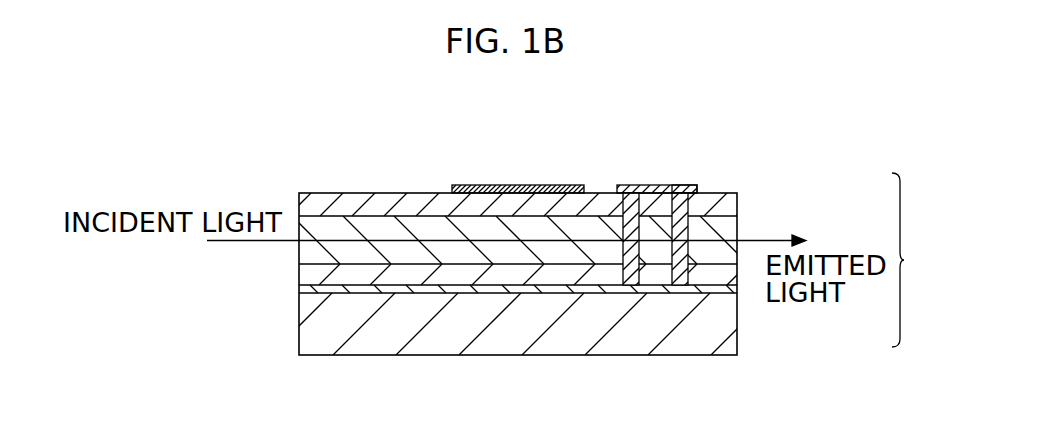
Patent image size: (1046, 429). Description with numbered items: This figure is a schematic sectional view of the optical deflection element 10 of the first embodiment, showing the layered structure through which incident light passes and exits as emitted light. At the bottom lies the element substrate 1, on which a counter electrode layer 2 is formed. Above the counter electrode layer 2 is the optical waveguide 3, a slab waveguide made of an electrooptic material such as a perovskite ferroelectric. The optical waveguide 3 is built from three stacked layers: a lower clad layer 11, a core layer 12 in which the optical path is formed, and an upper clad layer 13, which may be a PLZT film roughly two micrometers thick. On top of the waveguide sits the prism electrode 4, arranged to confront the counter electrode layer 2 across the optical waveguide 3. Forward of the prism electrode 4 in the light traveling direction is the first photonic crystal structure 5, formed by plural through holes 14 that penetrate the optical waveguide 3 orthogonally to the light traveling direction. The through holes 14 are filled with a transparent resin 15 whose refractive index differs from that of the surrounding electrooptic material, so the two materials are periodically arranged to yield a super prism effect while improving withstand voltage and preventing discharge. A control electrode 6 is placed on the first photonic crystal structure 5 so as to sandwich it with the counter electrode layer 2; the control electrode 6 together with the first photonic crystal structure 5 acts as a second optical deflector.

The element substrate 1 is at (348, 327).
The counter electrode layer 2 is at (452, 293).
The optical waveguide 3 is at (908, 260).
The prism electrode 4 is at (516, 185).
The first photonic crystal structure 5 is at (616, 245).
The control electrode 6 is at (668, 185).
The optical deflection element 10 is at (382, 115).
The lower clad layer 11 is at (298, 277).
The core layer 12 is at (298, 249).
The upper clad layer 13 is at (352, 193).
The through holes 14 is at (698, 185).
The transparent resin 15 is at (682, 275).